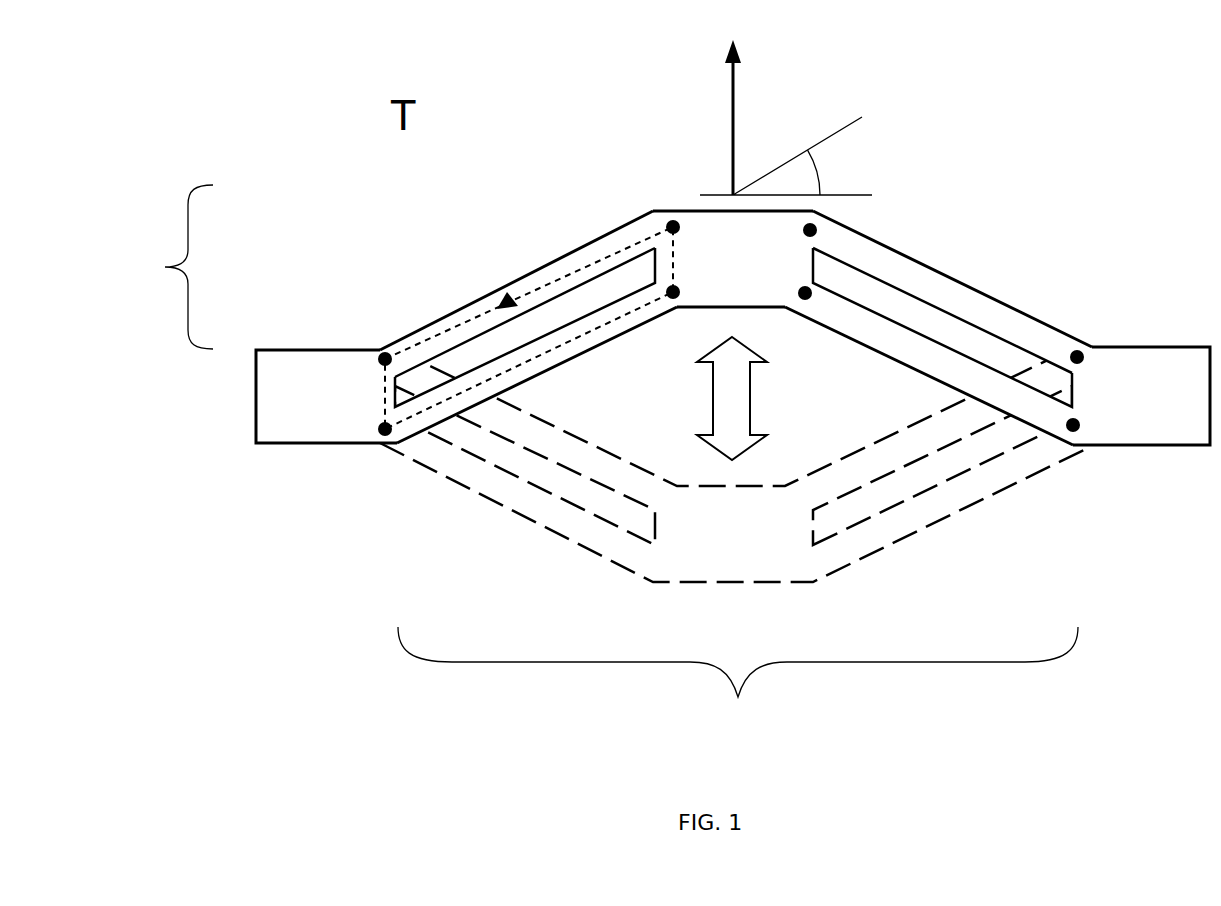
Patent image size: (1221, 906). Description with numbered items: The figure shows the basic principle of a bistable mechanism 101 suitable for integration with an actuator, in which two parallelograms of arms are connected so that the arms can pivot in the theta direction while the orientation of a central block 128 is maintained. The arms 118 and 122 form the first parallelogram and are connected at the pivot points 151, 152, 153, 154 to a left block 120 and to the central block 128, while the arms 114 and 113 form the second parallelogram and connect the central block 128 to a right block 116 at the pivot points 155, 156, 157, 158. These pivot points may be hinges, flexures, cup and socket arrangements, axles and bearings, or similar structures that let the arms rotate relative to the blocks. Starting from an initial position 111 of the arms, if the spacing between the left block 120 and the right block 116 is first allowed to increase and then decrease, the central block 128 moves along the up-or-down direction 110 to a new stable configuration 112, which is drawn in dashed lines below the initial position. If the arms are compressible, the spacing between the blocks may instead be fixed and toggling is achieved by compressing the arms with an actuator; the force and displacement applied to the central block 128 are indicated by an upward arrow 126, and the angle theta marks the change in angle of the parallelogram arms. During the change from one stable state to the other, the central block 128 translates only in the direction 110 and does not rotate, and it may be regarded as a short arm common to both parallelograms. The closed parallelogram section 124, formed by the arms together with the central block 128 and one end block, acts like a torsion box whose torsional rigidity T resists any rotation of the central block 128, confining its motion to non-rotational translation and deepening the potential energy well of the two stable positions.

The force sensing device 101 is at (684, 317).
The direction of motion of the central block 110 is at (755, 398).
The initial starting position 111 is at (165, 267).
The new stable configuration 112 is at (738, 683).
The arm 113 is at (920, 358).
The arm 114 is at (965, 297).
The right block 116 is at (1163, 378).
The arm 118 is at (424, 334).
The left block 120 is at (303, 362).
The arm 122 is at (500, 378).
The parallelogram section 124 is at (607, 287).
The force displacement direction 126 is at (800, 99).
The central block 128 is at (718, 252).
The pivot point 151 is at (383, 434).
The pivot point 152 is at (380, 353).
The pivot point 153 is at (666, 226).
The pivot point 154 is at (668, 297).
The pivot point 155 is at (1077, 431).
The pivot point 156 is at (1075, 351).
The pivot point 157 is at (820, 227).
The pivot point 158 is at (813, 292).